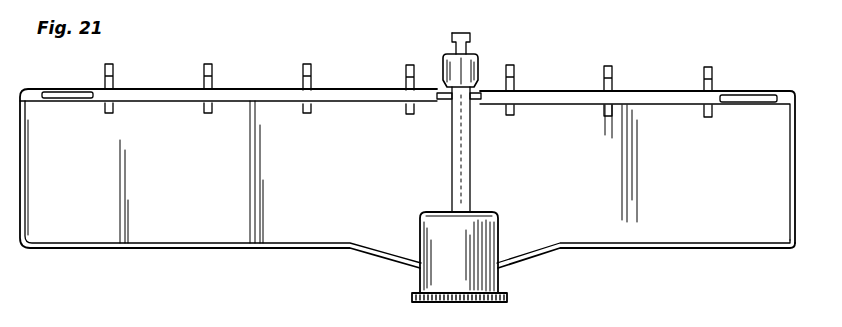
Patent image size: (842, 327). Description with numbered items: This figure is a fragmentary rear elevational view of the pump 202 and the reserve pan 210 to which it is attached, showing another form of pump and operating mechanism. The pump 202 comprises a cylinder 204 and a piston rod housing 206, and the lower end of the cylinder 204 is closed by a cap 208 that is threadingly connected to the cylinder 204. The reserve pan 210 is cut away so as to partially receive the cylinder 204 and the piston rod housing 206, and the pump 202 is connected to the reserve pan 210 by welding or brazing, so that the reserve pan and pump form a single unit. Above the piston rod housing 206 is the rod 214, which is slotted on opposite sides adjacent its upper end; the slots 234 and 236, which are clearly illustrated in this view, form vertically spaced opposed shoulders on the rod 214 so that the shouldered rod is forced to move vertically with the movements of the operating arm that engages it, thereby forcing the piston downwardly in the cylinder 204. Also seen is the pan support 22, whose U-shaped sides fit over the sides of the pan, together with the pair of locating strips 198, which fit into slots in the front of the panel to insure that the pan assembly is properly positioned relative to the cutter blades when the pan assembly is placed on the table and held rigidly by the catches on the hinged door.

The pan support 22 is at (407, 173).
The locating strips 198 is at (77, 80).
The pump 202 is at (480, 152).
The cylinder 204 is at (498, 244).
The piston rod housing 206 is at (462, 170).
The cap 208 is at (508, 298).
The reserve pan 210 is at (757, 243).
The rod 214 is at (470, 44).
The slot 234 is at (470, 43).
The slot 236 is at (455, 43).